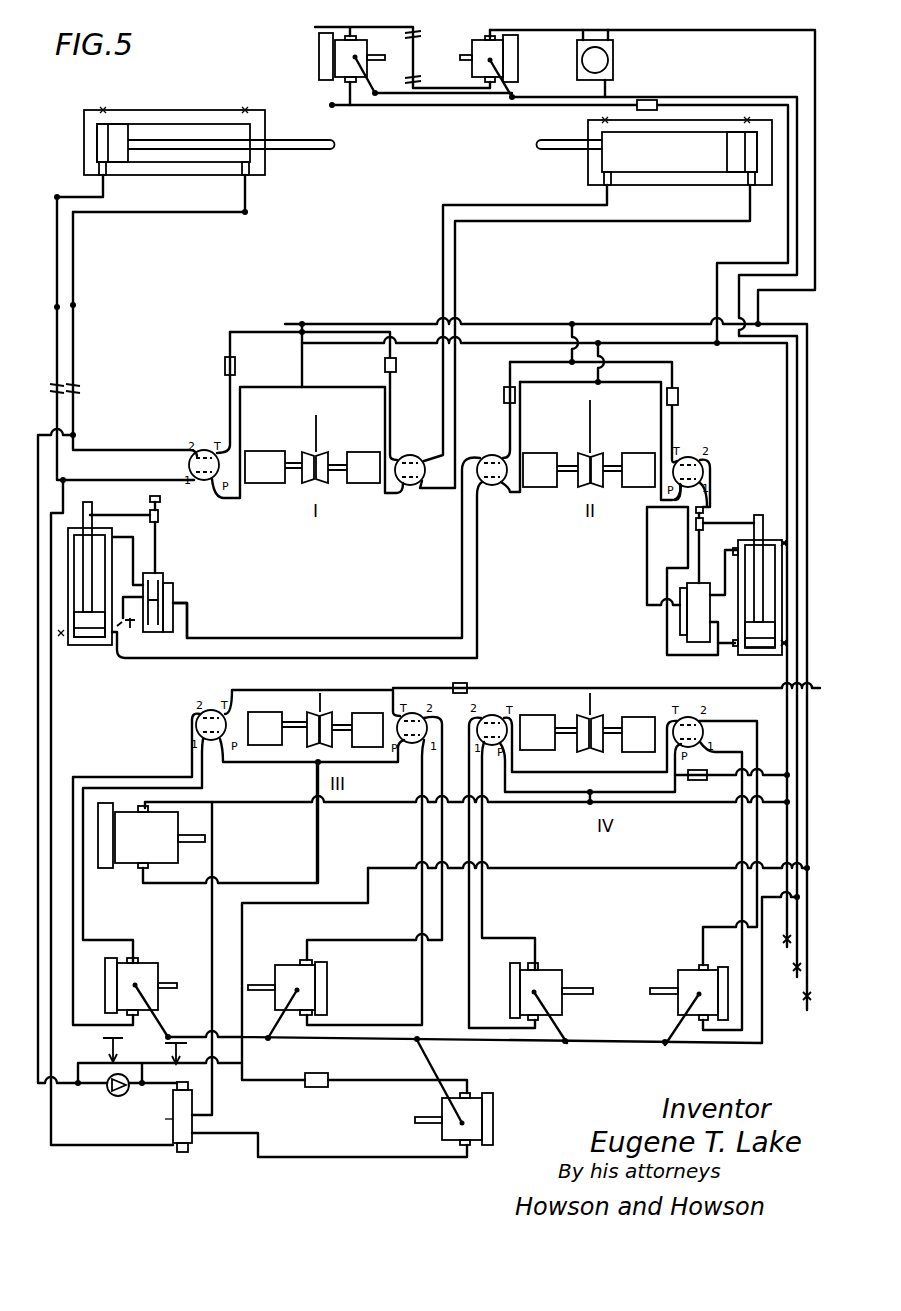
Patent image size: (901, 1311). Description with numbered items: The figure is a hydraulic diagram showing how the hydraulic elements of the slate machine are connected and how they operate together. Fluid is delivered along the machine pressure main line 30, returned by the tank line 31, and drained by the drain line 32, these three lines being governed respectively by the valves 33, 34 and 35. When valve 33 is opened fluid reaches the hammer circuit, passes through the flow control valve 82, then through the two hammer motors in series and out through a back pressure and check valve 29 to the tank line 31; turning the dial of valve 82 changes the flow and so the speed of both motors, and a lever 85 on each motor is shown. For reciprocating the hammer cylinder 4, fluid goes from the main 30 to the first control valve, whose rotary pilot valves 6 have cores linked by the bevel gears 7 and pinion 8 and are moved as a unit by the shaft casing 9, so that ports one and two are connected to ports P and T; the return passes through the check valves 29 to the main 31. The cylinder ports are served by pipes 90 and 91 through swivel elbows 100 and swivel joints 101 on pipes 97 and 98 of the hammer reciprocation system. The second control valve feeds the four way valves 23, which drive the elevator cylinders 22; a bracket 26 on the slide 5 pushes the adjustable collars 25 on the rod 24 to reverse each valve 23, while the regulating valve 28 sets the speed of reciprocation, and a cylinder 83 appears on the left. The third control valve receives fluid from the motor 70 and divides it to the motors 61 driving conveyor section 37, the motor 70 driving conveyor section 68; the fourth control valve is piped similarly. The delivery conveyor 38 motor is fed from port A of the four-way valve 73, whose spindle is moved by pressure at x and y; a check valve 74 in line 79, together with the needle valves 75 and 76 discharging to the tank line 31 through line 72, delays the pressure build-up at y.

The cylinder 4 is at (165, 110).
The slide 5 is at (116, 678).
The rotary pilot valve 6 is at (270, 485).
The bevel gear 7 is at (300, 454).
The pinion 8 is at (313, 450).
The shaft casing 9 is at (318, 432).
The cylinder 22 is at (68, 648).
The four way valve 23 is at (164, 575).
The rod 24 is at (157, 545).
The adjustable collar 25 is at (161, 499).
The bracket 26 is at (697, 525).
The regulating valve 28 is at (730, 634).
The back pressure and check valve 29 is at (647, 100).
The machine pressure main line 30 is at (610, 343).
The tank line 31 is at (538, 324).
The drain line 32 is at (697, 97).
The valve 33 is at (780, 939).
The valve 34 is at (800, 1001).
The valve 35 is at (790, 967).
The conveyor section 37 is at (180, 1015).
The delivery conveyor 38 is at (337, 1139).
The motor 61 is at (403, 1055).
The conveyor section 68 is at (230, 938).
The motor 70 is at (151, 851).
The line 72 is at (51, 722).
The four-way valve 73 is at (310, 1121).
The check valve 74 is at (110, 1092).
The needle control valve 75 is at (126, 1047).
The needle control valve 76 is at (188, 1051).
The line 79 is at (38, 720).
The flow control valve 82 is at (596, 40).
The cylinder 83 is at (66, 538).
The control lever 85 is at (370, 89).
The pipe 90 is at (56, 288).
The pipe 91 is at (74, 288).
The pipe 97 is at (57, 414).
The line 98 is at (74, 414).
The swivel elbow 100 is at (57, 199).
The swivel joint 101 is at (418, 36).